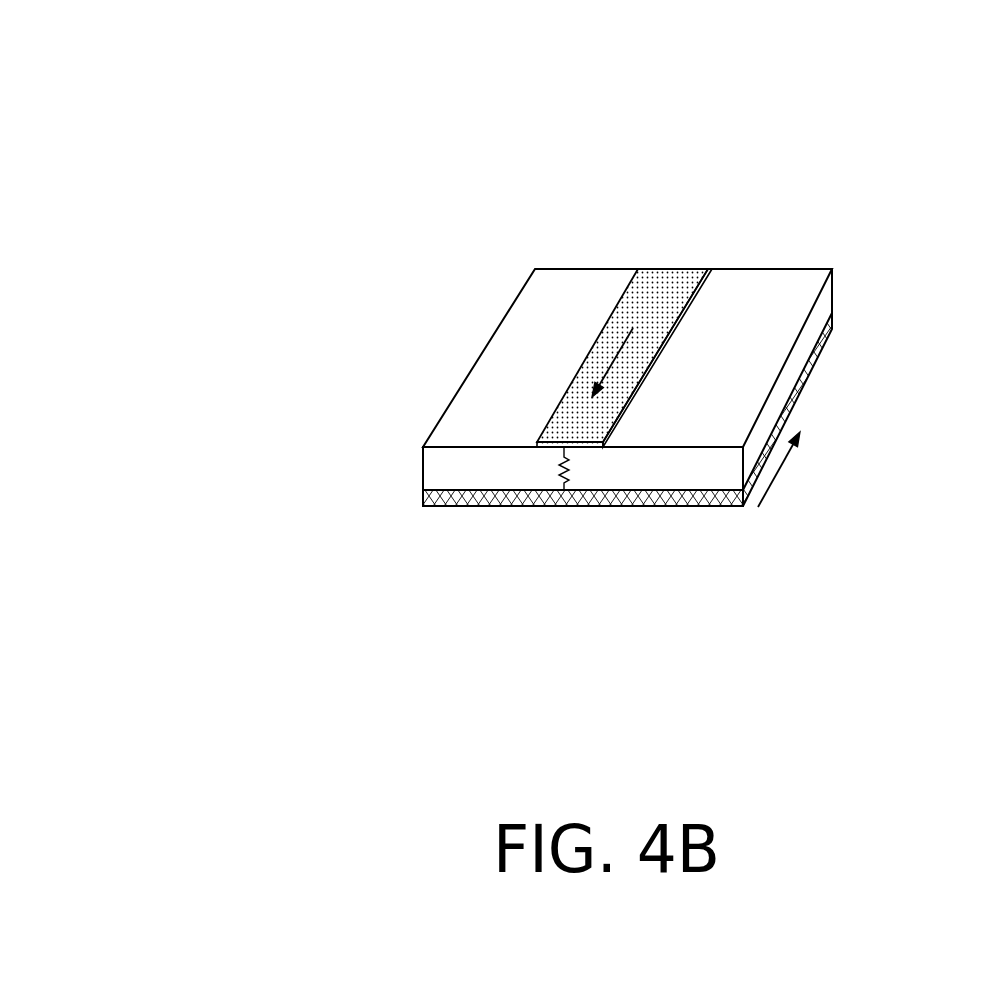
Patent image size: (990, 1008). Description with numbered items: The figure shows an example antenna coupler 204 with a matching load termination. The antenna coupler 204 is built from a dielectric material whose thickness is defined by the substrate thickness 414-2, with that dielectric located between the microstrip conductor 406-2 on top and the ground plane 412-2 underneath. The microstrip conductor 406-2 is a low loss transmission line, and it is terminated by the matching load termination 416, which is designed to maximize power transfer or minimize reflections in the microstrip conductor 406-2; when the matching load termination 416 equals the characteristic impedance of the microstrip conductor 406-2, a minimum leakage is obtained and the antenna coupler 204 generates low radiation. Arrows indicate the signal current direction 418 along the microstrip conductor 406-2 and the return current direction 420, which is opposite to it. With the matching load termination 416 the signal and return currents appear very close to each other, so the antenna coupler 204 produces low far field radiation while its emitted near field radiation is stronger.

The antenna coupler 204 is at (356, 113).
The microstrip conductor 406-2 is at (651, 284).
The signal current direction 418 is at (587, 345).
The substrate thickness 414-2 is at (417, 447).
The matching load termination 416 is at (536, 474).
The ground plane 412-2 is at (660, 518).
The return current direction 420 is at (822, 484).